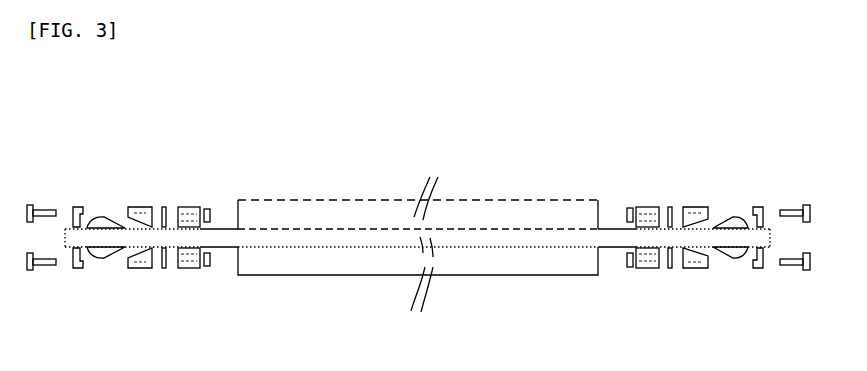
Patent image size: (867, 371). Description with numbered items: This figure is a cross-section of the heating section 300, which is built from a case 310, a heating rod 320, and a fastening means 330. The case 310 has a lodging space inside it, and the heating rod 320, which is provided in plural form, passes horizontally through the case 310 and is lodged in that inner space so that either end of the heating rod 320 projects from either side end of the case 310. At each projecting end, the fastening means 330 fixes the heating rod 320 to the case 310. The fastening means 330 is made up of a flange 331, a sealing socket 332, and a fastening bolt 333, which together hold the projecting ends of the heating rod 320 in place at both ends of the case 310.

The heating section 300 is at (693, 86).
The case 310 is at (476, 277).
The heating rod 320 is at (302, 236).
The fastening means 330 is at (172, 186).
The flange 331 is at (757, 270).
The sealing socket 332 is at (729, 219).
The fastening bolt 333 is at (783, 210).